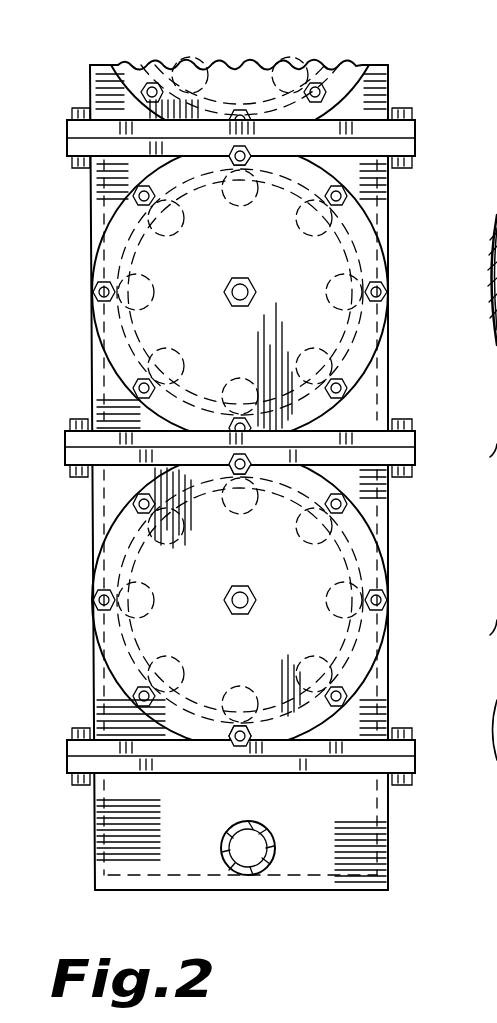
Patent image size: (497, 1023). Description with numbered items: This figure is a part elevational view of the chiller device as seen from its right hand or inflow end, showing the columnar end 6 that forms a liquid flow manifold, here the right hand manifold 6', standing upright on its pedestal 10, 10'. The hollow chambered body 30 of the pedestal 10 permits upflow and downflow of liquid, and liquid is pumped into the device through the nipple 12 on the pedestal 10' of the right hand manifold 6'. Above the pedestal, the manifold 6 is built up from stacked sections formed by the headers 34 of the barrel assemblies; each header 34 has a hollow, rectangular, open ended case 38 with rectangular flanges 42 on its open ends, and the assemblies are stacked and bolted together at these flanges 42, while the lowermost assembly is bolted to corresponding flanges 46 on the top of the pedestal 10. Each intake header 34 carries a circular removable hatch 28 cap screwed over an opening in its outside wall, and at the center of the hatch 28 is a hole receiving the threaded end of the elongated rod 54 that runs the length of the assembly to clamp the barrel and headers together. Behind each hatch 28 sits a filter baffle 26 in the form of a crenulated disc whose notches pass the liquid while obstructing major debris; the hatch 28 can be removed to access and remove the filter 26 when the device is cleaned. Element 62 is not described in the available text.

The columnar end 6 is at (437, 477).
The right hand manifold 6' is at (65, 477).
The pedestal 10 is at (94, 830).
The pedestal 10' is at (397, 852).
The nipple 12 is at (250, 876).
The baffle 26 is at (320, 636).
The removable hatch 28 is at (128, 223).
The body 30 is at (147, 882).
The header 34 is at (82, 304).
The case 38 is at (388, 201).
The rectangular flange 42 is at (415, 128).
The flange 46 is at (74, 765).
The elongated rod 54 is at (250, 624).
The ring 62 is at (491, 320).